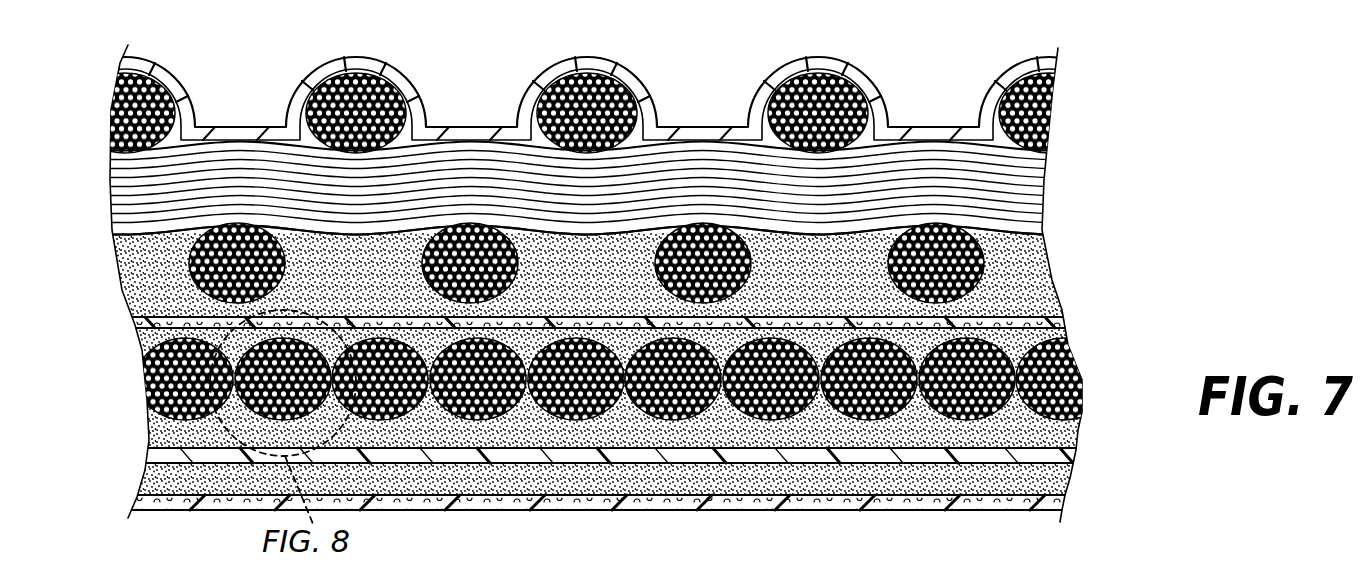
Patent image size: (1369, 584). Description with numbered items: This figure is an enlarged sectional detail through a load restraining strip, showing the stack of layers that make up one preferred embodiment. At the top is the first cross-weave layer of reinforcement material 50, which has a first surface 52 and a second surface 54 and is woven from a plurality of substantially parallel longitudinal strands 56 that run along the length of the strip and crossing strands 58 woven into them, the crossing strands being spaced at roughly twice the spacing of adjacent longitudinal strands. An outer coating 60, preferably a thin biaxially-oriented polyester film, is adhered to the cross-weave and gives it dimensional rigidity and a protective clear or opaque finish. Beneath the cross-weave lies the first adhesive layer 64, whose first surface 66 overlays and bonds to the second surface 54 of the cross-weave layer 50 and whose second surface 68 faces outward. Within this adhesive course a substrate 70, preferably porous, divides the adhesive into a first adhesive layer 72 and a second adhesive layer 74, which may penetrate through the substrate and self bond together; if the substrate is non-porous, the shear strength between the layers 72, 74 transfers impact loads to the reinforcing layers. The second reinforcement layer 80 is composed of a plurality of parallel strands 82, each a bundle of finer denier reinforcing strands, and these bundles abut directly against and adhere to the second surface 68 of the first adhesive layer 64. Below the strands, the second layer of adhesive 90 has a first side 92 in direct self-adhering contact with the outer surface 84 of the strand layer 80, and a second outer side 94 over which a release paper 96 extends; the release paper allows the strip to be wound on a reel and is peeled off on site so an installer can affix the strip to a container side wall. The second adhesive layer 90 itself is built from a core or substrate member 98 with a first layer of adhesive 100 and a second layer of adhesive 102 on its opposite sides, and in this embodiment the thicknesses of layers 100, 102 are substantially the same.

The first cross-weave layer of reinforcement material 50 is at (1050, 118).
The first surface 52 is at (1050, 87).
The second surface 54 is at (112, 233).
The longitudinal strands 56 is at (108, 108).
The crossing strands 58 is at (470, 182).
The outer coating 60 is at (237, 133).
The first adhesive layer 64 is at (1060, 279).
The first surface of first adhesive layer 66 is at (1020, 235).
The second surface of first adhesive layer 68 is at (140, 345).
The substrate 70 is at (135, 321).
The first adhesive layer portion 72 is at (640, 250).
The second adhesive layer portion 74 is at (1020, 336).
The second reinforcement layer 80 is at (1084, 381).
The parallel strands 82 is at (140, 408).
The outer surface of second reinforcement layer 84 is at (1082, 412).
The second layer of adhesive 90 is at (1052, 478).
The first side of second adhesive layer 92 is at (1060, 422).
The second outer side of second adhesive layer 94 is at (1057, 488).
The release paper 96 is at (973, 511).
The core or substrate member 98 is at (155, 452).
The first layer of adhesive 100 is at (165, 430).
The second layer of adhesive 102 is at (165, 475).